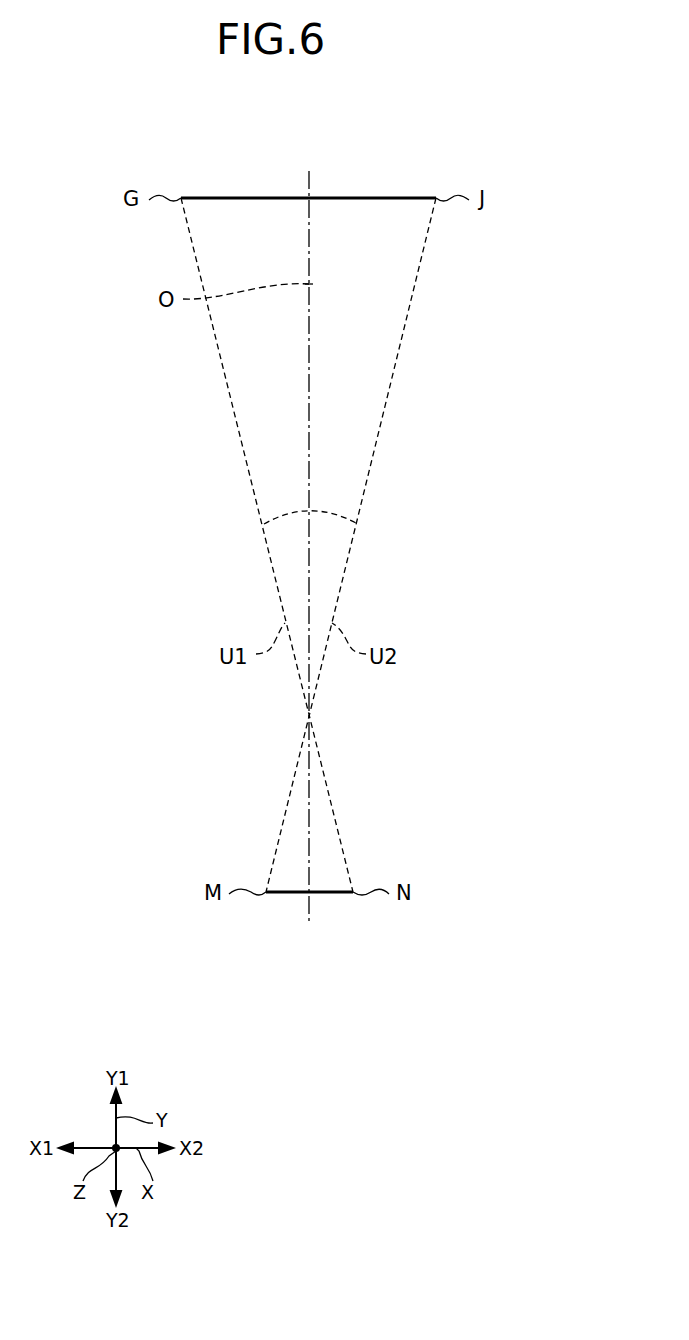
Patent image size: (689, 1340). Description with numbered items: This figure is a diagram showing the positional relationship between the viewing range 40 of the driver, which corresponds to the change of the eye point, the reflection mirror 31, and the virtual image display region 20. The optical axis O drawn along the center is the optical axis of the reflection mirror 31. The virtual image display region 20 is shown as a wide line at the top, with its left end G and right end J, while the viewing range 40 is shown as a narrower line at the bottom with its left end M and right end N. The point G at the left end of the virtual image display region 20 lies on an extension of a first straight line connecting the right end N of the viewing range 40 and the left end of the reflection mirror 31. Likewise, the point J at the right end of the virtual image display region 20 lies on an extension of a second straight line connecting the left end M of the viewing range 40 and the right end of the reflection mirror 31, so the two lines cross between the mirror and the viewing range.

The virtual image display region 20 is at (347, 190).
The reflection mirror 31 is at (333, 513).
The viewing range 40 is at (288, 900).